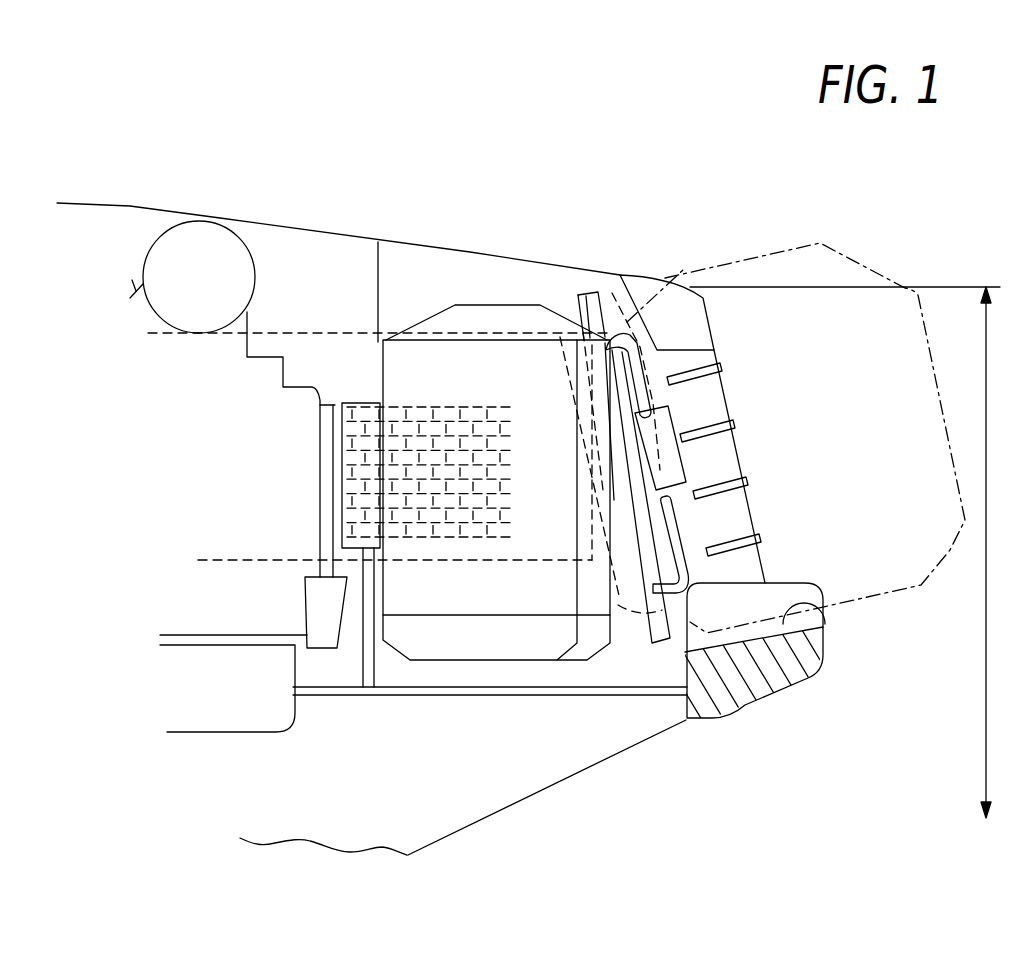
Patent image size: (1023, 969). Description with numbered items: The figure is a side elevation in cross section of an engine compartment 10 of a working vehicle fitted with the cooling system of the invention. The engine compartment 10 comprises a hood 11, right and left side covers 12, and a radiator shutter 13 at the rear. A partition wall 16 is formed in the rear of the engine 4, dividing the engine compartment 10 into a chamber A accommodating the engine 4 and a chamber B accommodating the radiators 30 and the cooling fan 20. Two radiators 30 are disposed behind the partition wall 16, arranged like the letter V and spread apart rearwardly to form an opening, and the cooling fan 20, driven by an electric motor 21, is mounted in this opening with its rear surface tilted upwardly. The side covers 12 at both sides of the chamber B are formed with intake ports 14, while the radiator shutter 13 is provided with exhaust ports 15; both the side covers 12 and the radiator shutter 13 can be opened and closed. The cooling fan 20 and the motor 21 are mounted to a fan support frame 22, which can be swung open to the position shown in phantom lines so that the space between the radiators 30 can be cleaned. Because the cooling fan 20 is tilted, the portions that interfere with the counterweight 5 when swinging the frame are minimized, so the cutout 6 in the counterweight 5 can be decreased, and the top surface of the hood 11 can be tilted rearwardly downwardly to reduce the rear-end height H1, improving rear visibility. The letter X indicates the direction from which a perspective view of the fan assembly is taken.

The engine 4 is at (202, 698).
The counterweight 5 is at (799, 688).
The cutout 6 is at (826, 610).
The engine compartment 10 is at (145, 229).
The hood 11 is at (473, 252).
The side cover 12 is at (307, 350).
The radiator shutter 13 is at (707, 351).
The intake port 14 is at (448, 405).
The exhaust port 15 is at (710, 399).
The partition wall 16 is at (378, 287).
The cooling fan 20 is at (617, 603).
The electric motor 21 is at (622, 333).
The fan support frame 22 is at (657, 645).
The radiator 30 is at (520, 595).
The chamber A is at (323, 282).
The chamber B is at (510, 292).
The direction X is at (547, 246).
The height H1 is at (856, 552).